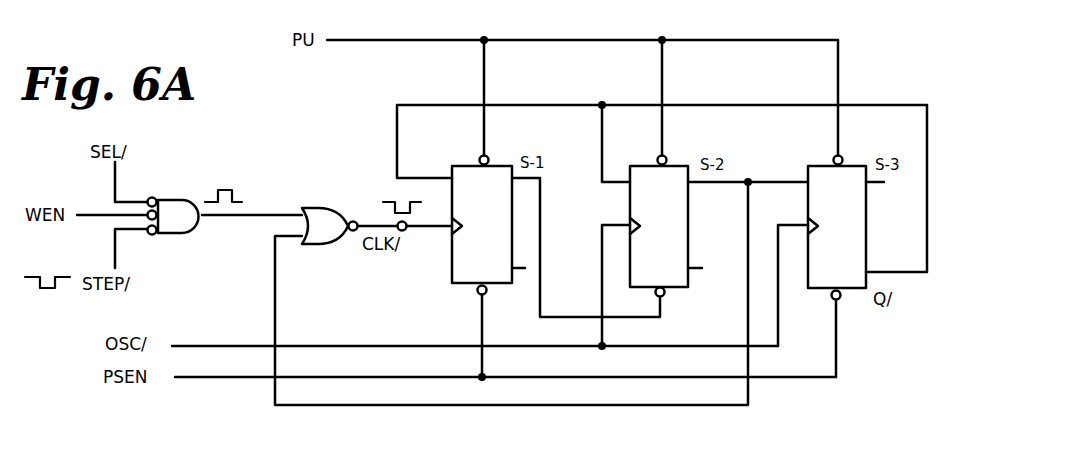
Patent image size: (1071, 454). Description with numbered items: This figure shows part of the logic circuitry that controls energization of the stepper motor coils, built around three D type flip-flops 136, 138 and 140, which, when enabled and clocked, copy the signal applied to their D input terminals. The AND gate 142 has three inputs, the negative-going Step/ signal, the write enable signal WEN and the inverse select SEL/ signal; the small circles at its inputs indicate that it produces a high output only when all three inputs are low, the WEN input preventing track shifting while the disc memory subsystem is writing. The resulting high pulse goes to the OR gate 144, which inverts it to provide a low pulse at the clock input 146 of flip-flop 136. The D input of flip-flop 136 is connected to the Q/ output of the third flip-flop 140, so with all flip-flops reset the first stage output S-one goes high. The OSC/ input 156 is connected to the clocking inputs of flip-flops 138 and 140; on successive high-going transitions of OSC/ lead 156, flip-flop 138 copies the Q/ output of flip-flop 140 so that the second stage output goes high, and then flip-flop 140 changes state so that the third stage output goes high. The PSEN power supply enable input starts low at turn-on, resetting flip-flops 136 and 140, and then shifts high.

The first D type flip-flop 136 is at (497, 178).
The second D type flip-flop 138 is at (670, 178).
The third D type flip-flop 140 is at (850, 182).
The AND gate 142 is at (184, 211).
The OR gate 144 is at (320, 218).
The clock input 146 is at (462, 224).
The OSC/ input 156 is at (226, 344).